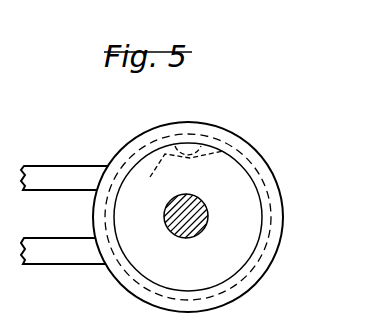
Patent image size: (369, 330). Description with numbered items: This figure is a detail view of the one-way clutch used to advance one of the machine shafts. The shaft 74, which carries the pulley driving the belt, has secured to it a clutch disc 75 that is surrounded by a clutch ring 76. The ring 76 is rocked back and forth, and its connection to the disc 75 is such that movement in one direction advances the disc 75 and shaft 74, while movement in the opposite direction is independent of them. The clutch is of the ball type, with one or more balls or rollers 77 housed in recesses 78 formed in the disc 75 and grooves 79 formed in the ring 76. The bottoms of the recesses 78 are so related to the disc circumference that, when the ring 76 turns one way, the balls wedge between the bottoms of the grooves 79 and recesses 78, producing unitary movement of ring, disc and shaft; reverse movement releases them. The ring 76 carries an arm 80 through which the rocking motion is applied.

The shaft 74 is at (205, 211).
The clutch disc 75 is at (223, 270).
The clutch ring 76 is at (129, 284).
The balls or rollers 77 is at (180, 174).
The recesses 78 is at (192, 160).
The grooves 79 is at (218, 140).
The arm 80 is at (35, 167).